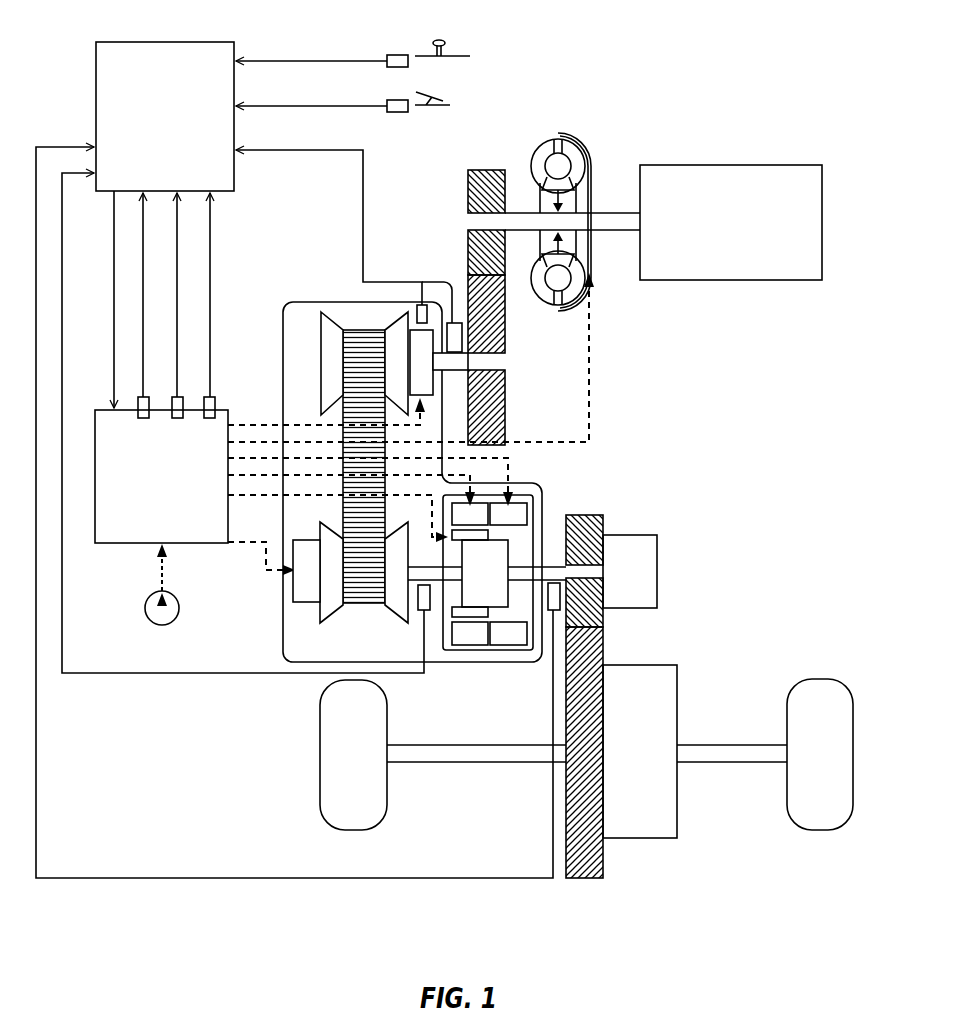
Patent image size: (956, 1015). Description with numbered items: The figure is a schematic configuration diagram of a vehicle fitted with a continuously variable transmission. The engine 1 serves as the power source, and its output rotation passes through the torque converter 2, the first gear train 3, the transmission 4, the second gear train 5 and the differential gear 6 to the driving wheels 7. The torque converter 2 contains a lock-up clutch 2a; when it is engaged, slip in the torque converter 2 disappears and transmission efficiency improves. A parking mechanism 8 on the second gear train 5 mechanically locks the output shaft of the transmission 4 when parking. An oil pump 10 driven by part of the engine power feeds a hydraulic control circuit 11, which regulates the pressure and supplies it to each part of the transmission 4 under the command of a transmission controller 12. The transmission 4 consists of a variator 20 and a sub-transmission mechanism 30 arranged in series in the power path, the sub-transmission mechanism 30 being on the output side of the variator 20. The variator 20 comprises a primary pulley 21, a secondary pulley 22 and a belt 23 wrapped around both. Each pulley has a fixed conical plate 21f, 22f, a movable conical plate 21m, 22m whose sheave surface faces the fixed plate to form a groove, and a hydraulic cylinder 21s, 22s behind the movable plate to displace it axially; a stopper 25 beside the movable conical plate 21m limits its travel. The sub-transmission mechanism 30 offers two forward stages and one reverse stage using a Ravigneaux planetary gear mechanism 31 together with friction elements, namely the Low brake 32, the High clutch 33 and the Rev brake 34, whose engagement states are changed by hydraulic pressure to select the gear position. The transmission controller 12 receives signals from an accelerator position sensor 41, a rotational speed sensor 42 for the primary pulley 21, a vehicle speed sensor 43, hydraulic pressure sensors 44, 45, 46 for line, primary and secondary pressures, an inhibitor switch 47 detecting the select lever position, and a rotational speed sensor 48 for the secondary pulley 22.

The engine 1 is at (815, 172).
The torque converter 2 is at (590, 170).
The lock-up clutch 2a is at (586, 250).
The first gear train 3 is at (488, 166).
The transmission 4 is at (283, 317).
The second gear train 5 is at (583, 889).
The differential gear 6 is at (637, 823).
The driving wheels 7 is at (355, 813).
The parking mechanism 8 is at (642, 562).
The oil pump 10 is at (145, 600).
The hydraulic control circuit 11 is at (116, 409).
The transmission controller 12 is at (225, 52).
The variator 20 is at (389, 450).
The primary pulley 21 is at (403, 328).
The fixed conical plate 21f is at (330, 317).
The movable conical plate 21m is at (398, 317).
The hydraulic cylinder 21s is at (430, 368).
The secondary pulley 22 is at (338, 591).
The fixed conical plate 22f is at (392, 610).
The movable conical plate 22m is at (333, 612).
The hydraulic cylinder 22s is at (292, 586).
The belt 23 is at (365, 330).
The stopper 25 is at (421, 282).
The sub-transmission mechanism 30 is at (538, 549).
The Ravigneaux planetary gear mechanism 31 is at (488, 568).
The Low brake 32 is at (472, 517).
The High clutch 33 is at (468, 613).
The Rev brake 34 is at (508, 517).
The accelerator position sensor 41 is at (398, 112).
The rotational speed sensor 42 is at (452, 282).
The vehicle speed sensor 43 is at (550, 608).
The hydraulic pressure sensor 44 is at (145, 402).
The hydraulic pressure sensor 45 is at (178, 402).
The hydraulic pressure sensor 46 is at (210, 402).
The inhibitor switch 47 is at (397, 55).
The rotational speed sensor 48 is at (425, 597).